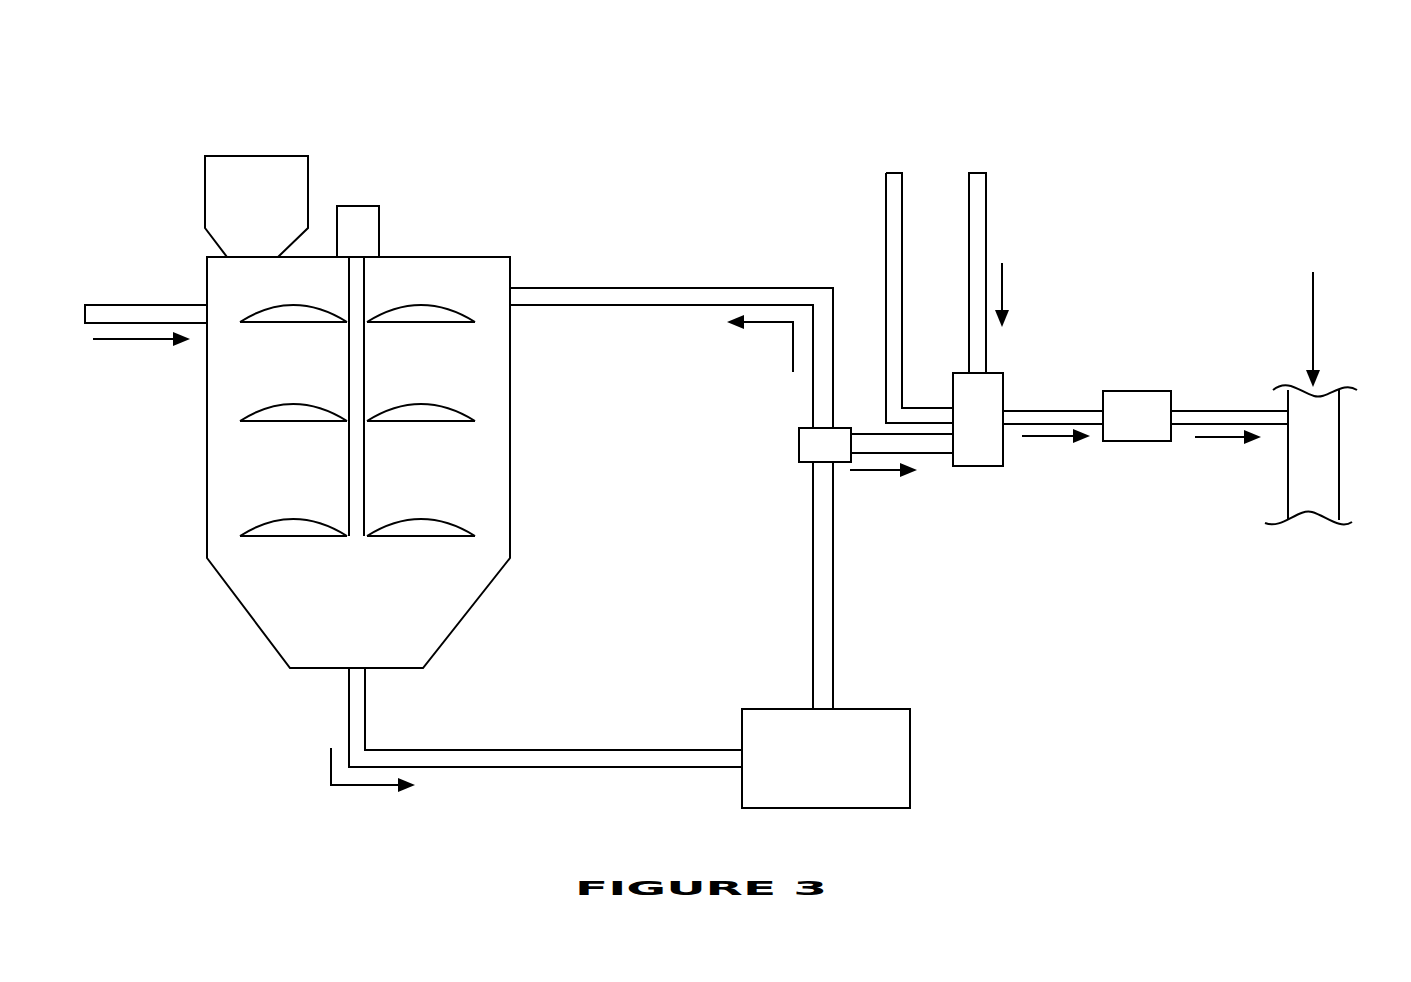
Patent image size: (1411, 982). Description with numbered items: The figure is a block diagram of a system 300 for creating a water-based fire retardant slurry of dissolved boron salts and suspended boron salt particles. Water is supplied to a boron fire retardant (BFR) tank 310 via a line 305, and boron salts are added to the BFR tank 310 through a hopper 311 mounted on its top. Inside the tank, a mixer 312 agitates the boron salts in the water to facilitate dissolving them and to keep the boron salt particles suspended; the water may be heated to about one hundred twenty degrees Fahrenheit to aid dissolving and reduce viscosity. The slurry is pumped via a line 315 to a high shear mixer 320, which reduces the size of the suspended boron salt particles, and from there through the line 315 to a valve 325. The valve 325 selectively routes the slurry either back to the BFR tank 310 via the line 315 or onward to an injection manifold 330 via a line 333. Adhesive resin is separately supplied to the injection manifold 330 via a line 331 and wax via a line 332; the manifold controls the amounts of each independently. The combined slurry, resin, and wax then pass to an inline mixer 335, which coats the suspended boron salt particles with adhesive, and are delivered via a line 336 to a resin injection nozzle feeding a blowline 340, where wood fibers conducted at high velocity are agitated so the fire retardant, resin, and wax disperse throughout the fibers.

The system 300 is at (155, 57).
The line 305 is at (162, 303).
The boron fire retardant (BFR) tank 310 is at (338, 616).
The hopper 311 is at (238, 229).
The mixer 312 is at (370, 223).
The line 315 is at (572, 288).
The high shear mixer 320 is at (806, 796).
The valve 325 is at (799, 445).
The injection manifold 330 is at (1003, 388).
The line 331 is at (883, 215).
The line 332 is at (988, 217).
The line 333 is at (935, 453).
The inline mixer 335 is at (1137, 441).
The line 336 is at (1221, 411).
The blowline 340 is at (1312, 512).